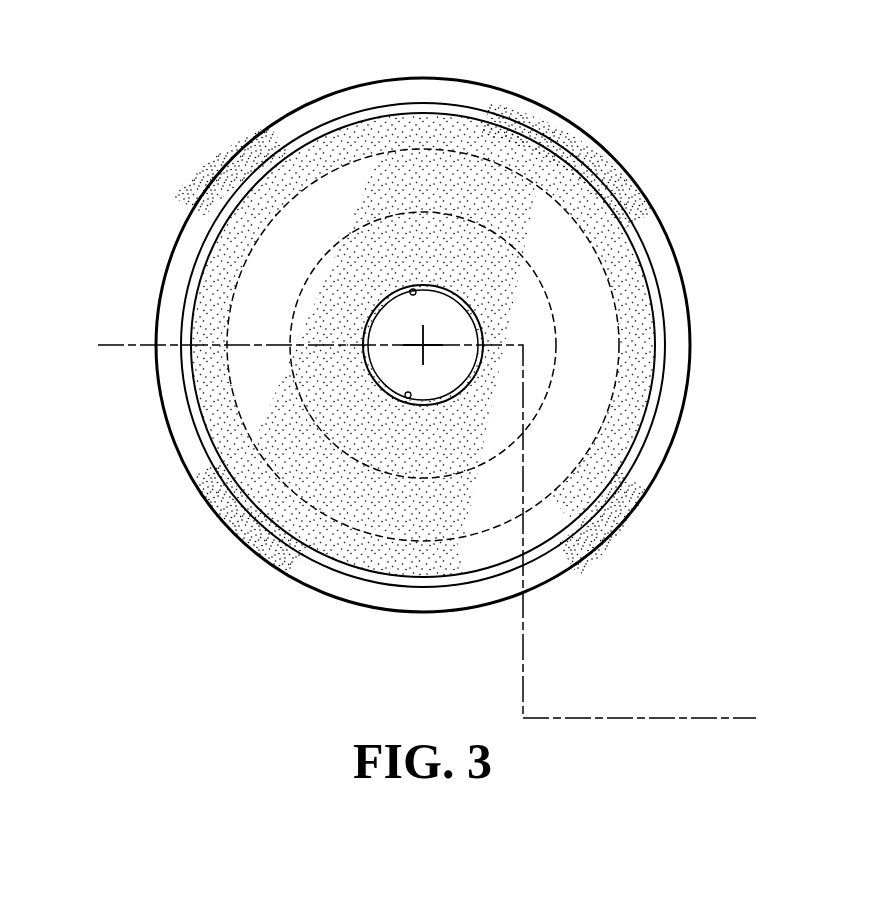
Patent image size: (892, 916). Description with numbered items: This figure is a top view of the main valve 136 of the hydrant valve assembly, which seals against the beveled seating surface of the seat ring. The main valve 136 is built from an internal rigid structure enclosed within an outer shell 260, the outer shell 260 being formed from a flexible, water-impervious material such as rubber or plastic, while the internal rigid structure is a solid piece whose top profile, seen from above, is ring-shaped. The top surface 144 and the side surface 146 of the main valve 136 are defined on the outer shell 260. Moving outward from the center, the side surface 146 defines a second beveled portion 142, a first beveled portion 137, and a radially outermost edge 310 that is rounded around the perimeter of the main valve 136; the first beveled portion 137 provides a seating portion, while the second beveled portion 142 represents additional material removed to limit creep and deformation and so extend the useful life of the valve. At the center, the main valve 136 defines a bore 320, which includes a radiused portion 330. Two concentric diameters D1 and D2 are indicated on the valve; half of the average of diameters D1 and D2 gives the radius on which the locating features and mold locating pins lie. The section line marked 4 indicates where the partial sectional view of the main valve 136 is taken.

The main valve 136 is at (240, 120).
The radially outermost edge 310 is at (177, 243).
The second beveled portion 142 is at (203, 433).
The first beveled portion 137 is at (291, 558).
The top surface 144 is at (557, 257).
The side surface 146 is at (640, 205).
The outer shell 260 is at (583, 383).
The radiused portion 330 is at (410, 290).
The bore 320 is at (408, 398).
The diameter D1 is at (428, 207).
The diameter D2 is at (567, 483).
The section line 4- 4 is at (98, 300).